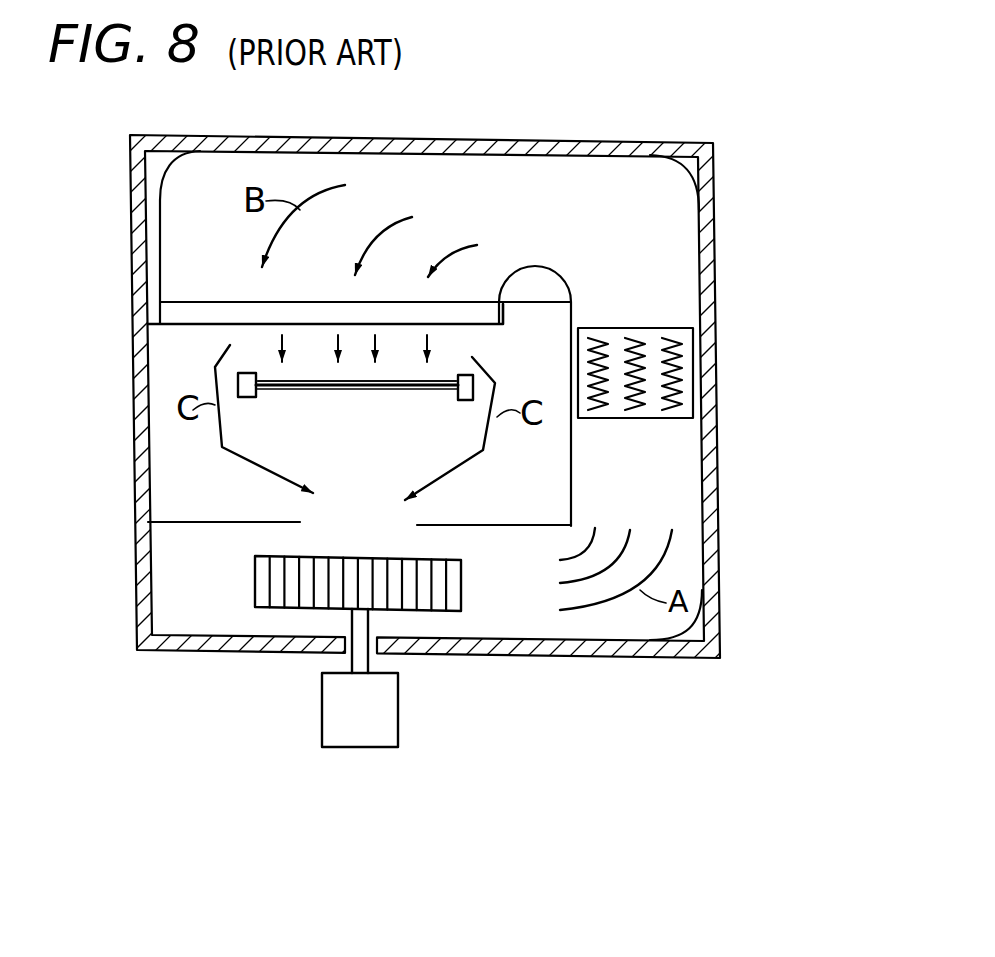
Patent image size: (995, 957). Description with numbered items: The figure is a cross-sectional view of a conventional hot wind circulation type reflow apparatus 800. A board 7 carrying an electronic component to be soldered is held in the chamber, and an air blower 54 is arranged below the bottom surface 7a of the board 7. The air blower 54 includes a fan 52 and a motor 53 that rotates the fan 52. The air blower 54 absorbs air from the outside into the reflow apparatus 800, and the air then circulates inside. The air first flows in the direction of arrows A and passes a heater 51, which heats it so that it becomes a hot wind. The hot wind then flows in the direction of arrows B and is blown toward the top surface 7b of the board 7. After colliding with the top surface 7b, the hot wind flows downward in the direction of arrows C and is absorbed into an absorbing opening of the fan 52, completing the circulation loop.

The reflow apparatus 800 is at (757, 82).
The heater 51 is at (685, 363).
The fan 52 is at (440, 597).
The motor 53 is at (387, 708).
The air blower 54 is at (436, 695).
The board 7 is at (355, 398).
The bottom surface 7a is at (320, 390).
The top surface 7b is at (357, 360).